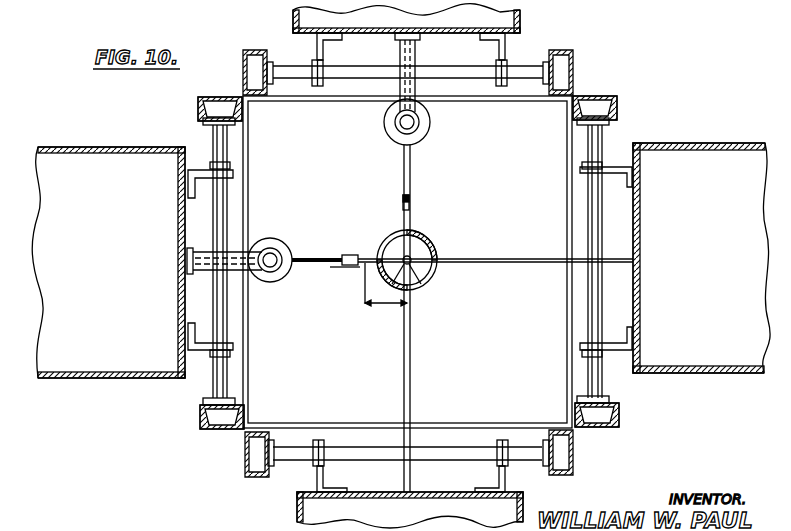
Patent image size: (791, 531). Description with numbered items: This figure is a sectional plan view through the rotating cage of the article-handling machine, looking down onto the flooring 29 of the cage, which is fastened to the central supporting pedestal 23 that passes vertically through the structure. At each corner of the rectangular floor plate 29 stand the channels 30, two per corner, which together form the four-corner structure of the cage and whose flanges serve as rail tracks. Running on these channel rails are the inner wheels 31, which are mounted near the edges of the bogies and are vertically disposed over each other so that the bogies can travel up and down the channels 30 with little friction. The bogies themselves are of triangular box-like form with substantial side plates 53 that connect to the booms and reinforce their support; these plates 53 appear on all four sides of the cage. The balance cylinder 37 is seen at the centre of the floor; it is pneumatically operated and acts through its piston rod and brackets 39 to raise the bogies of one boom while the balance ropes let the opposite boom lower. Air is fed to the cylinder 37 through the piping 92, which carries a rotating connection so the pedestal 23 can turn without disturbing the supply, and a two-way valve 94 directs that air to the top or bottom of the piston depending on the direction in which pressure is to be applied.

The central supporting pedestal 23 is at (432, 243).
The flooring 29 is at (345, 371).
The channels 30 is at (200, 97).
The inner wheels 31 is at (252, 72).
The cylinder 37 is at (289, 254).
The brackets 39 is at (415, 58).
The side plates 53 is at (295, 18).
The piping 92 is at (411, 216).
The two-way valve 94 is at (403, 202).